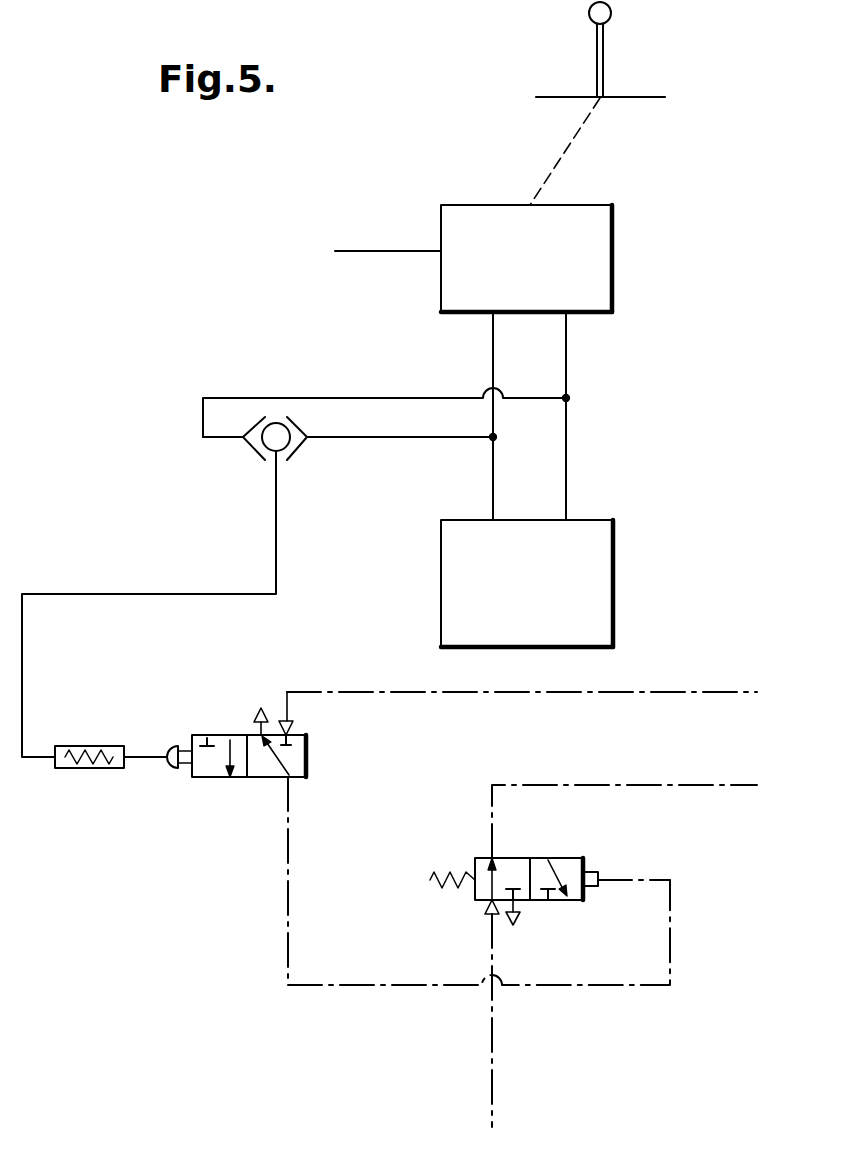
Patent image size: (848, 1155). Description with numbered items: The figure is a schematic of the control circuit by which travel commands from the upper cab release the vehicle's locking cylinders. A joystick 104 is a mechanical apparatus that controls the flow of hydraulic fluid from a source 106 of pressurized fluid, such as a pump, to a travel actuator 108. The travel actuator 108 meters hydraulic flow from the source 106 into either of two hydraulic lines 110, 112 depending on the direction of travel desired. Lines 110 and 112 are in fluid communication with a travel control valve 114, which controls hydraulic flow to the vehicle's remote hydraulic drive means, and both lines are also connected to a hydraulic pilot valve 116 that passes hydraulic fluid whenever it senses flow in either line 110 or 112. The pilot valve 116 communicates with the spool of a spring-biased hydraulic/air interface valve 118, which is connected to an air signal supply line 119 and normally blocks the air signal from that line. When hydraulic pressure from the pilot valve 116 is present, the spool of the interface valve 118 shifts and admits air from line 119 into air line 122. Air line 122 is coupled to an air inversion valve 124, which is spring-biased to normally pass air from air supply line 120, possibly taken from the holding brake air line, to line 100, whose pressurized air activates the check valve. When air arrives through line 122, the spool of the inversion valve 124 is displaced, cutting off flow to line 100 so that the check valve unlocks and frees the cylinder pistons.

The line 100 is at (660, 785).
The joystick 104 is at (597, 58).
The source of pressurized fluid 106 is at (369, 251).
The travel actuator 108 is at (600, 240).
The hydraulic line 110 is at (493, 352).
The hydraulic line 112 is at (566, 350).
The travel control valve 114 is at (603, 590).
The hydraulic pilot valve 116 is at (255, 455).
The hydraulic/air interface valve 118 is at (218, 735).
The air signal supply line 119 is at (392, 692).
The air supply line 120 is at (492, 1048).
The air line 122 is at (288, 852).
The air inversion valve 124 is at (560, 858).